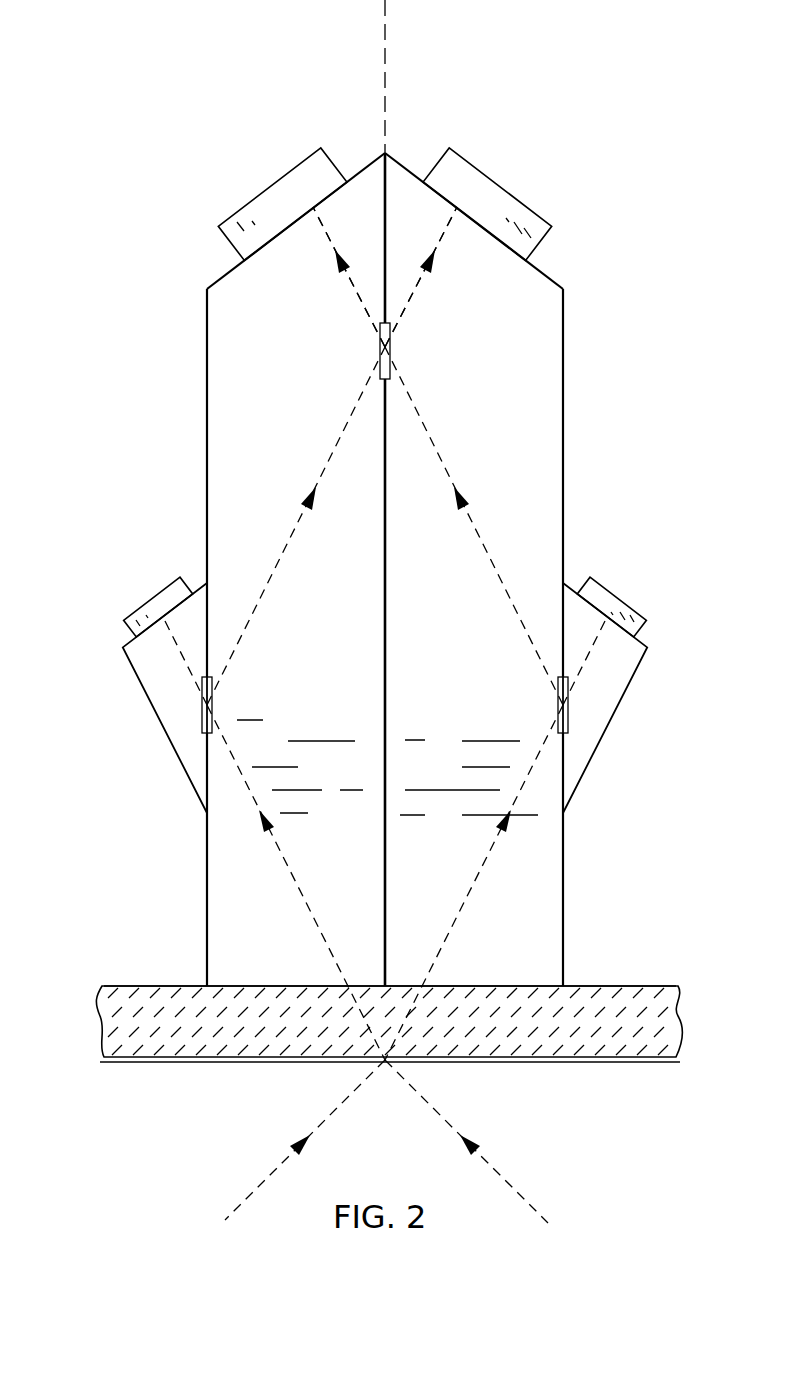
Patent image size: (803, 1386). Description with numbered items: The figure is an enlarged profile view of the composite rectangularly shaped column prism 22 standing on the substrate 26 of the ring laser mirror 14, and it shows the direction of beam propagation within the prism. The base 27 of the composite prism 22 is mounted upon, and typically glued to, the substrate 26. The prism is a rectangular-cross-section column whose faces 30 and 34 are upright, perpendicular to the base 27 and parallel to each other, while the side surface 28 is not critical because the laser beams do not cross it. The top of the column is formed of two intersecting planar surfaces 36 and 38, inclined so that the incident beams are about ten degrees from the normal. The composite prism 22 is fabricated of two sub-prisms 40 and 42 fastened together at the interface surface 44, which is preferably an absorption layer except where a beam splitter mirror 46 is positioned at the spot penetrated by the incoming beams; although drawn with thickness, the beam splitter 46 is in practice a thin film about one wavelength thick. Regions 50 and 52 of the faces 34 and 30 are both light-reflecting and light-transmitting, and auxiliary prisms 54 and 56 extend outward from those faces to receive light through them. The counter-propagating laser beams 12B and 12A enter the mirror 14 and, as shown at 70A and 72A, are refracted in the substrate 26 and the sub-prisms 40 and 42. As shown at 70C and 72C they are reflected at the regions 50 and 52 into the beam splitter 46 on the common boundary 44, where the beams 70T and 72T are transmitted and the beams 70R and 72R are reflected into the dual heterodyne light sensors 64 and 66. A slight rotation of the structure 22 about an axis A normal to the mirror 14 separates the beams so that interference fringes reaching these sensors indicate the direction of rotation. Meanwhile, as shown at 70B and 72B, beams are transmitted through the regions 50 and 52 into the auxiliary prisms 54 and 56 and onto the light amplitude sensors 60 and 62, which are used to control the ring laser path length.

The axis A is at (385, 90).
The counter-propagating laser beam 12A is at (438, 1113).
The counter-propagating laser beam 12B is at (332, 1112).
The mirror 14 is at (608, 1062).
The composite rectangularly shaped column prism 22 is at (423, 550).
The substrate 26 is at (402, 1017).
The base 27 is at (490, 985).
The side surface 28 is at (258, 550).
The face 30 is at (565, 453).
The face 34 is at (207, 480).
The inclined planar surface 36 is at (367, 180).
The inclined planar surface 38 is at (552, 258).
The sub-prism 40 is at (243, 508).
The sub-prism 42 is at (530, 508).
The interface surface 44 is at (386, 554).
The beam splitter mirror 46 is at (392, 352).
The light-reflecting and light-transmitting region 50 is at (200, 715).
The light-reflecting and light-transmitting region 52 is at (572, 715).
The auxiliary prism 54 is at (183, 738).
The auxiliary prism 56 is at (592, 737).
The light amplitude sensor 60 is at (150, 605).
The light amplitude sensor 62 is at (627, 605).
The dual heterodyne light sensor 64 is at (318, 168).
The dual heterodyne light sensor 66 is at (518, 203).
The refracted beam 70A is at (296, 877).
The transmitted beam 70B is at (127, 648).
The reflected beam 70C is at (268, 582).
The transmitted beam 70T is at (440, 288).
The reflected beam 70R is at (302, 277).
The refracted beam 72A is at (476, 877).
The transmitted beam 72B is at (645, 648).
The reflected beam 72C is at (502, 582).
The transmitted beam 72T is at (347, 278).
The reflected beam 72R is at (467, 277).